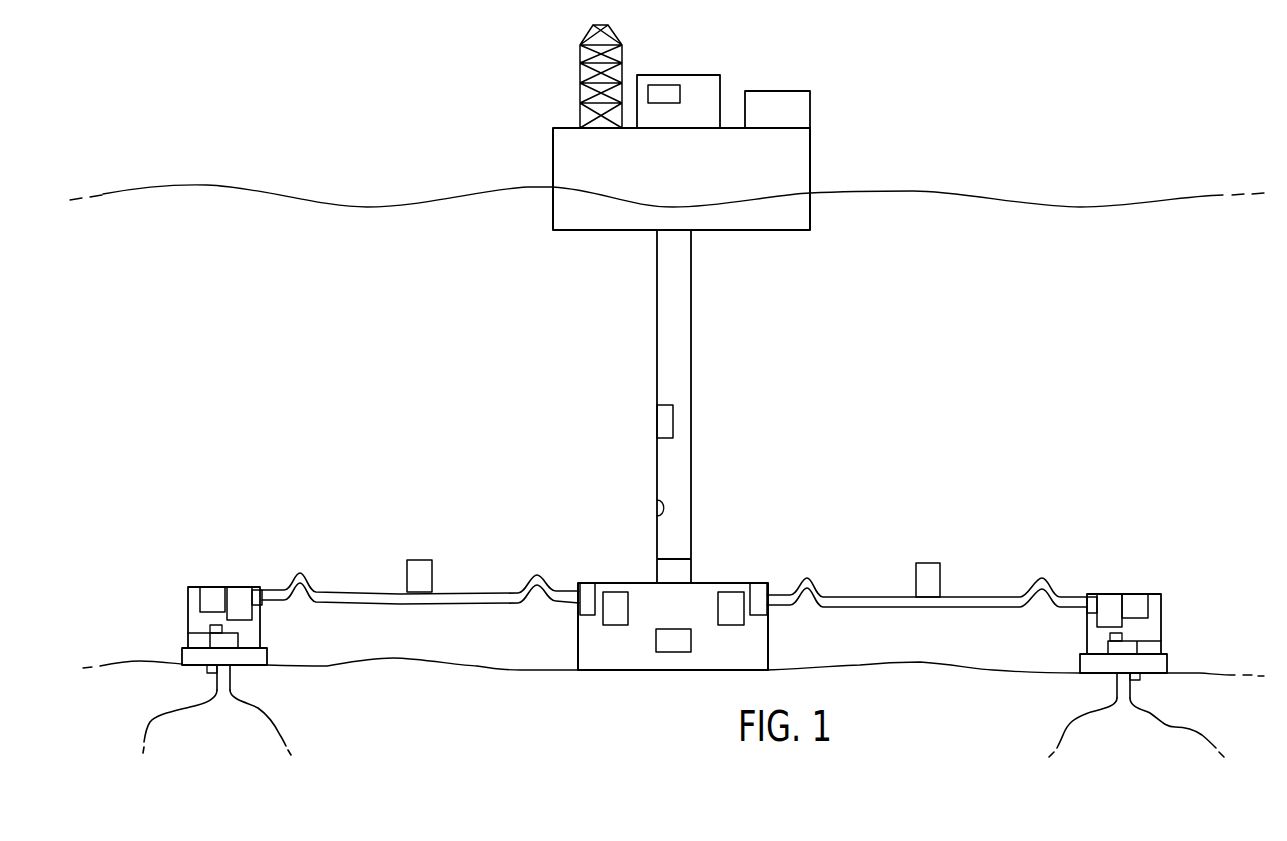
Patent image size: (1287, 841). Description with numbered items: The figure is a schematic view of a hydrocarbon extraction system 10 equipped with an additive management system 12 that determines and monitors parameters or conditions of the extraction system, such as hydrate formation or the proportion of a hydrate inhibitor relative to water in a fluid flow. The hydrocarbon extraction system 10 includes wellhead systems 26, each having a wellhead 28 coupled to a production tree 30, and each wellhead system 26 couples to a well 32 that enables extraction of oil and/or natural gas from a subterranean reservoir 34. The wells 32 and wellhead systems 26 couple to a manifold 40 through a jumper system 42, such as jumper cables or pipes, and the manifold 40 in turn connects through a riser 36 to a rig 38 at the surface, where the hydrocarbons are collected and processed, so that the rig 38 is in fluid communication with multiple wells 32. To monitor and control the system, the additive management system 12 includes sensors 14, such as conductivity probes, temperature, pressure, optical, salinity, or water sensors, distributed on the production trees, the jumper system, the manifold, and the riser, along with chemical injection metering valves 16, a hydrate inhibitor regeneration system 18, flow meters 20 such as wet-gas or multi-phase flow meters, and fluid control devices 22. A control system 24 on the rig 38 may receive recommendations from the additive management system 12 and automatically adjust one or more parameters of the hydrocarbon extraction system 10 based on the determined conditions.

The hydrocarbon extraction system 10 is at (982, 307).
The additive management system 12 is at (254, 317).
The sensors 14 is at (657, 420).
The chemical injection metering valves 16 is at (675, 652).
The hydrate inhibitor regeneration system 18 is at (810, 108).
The flow meters 20 is at (585, 583).
The fluid control devices 22 is at (700, 583).
The control system 24 is at (663, 85).
The wellhead system 26 is at (161, 570).
The wellhead 28 is at (267, 658).
The production tree 30 is at (197, 587).
The well 32 is at (232, 678).
The subterranean reservoir 34 is at (262, 708).
The riser 36 is at (657, 512).
The rig 38 is at (789, 246).
The manifold 40 is at (725, 583).
The jumper system 42 is at (376, 592).